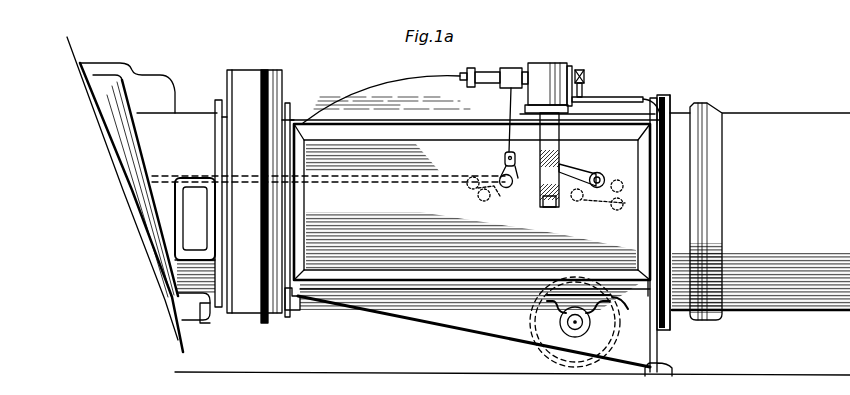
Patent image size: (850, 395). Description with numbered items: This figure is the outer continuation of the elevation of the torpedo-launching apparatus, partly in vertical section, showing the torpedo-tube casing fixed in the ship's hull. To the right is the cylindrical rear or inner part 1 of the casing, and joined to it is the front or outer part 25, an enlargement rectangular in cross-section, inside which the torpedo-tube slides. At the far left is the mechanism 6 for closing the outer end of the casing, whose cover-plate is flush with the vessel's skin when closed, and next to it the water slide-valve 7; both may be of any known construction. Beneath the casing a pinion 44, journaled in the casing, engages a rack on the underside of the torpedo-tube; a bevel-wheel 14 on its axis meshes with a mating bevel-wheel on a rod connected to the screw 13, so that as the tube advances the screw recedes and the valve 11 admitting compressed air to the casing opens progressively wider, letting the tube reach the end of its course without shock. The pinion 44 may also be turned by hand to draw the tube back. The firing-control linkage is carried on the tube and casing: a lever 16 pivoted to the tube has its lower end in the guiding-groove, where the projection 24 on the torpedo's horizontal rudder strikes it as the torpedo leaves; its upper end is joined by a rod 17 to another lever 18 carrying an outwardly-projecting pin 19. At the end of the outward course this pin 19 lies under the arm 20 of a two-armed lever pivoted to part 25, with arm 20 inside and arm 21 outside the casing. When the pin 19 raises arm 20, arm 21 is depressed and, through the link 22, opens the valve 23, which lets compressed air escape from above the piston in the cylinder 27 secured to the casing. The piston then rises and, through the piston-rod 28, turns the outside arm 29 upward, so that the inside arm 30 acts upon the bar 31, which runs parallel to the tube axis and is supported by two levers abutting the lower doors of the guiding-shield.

The rear part of torpedo-tube casing 1 is at (761, 244).
The closing mechanism 6 is at (177, 130).
The water slide-valve 7 is at (244, 198).
The valve 11 is at (488, 88).
The screw 13 is at (716, 314).
The bevel-wheel 14 is at (585, 82).
The lever 16 is at (156, 176).
The rod 17 is at (361, 183).
The lever 18 is at (486, 199).
The pin 19 is at (469, 188).
The inside arm 20 is at (498, 176).
The outside arm 21 is at (538, 186).
The rod 22 is at (508, 116).
The valve 23 is at (540, 72).
The projection 24 is at (142, 200).
The front part of torpedo-tube casing 25 is at (472, 217).
The cylinder 27 is at (570, 68).
The piston-rod 28 is at (559, 160).
The outside arm 29 is at (600, 174).
The inside arm 30 is at (623, 203).
The bar 31 is at (577, 203).
The pinion 44 is at (614, 332).